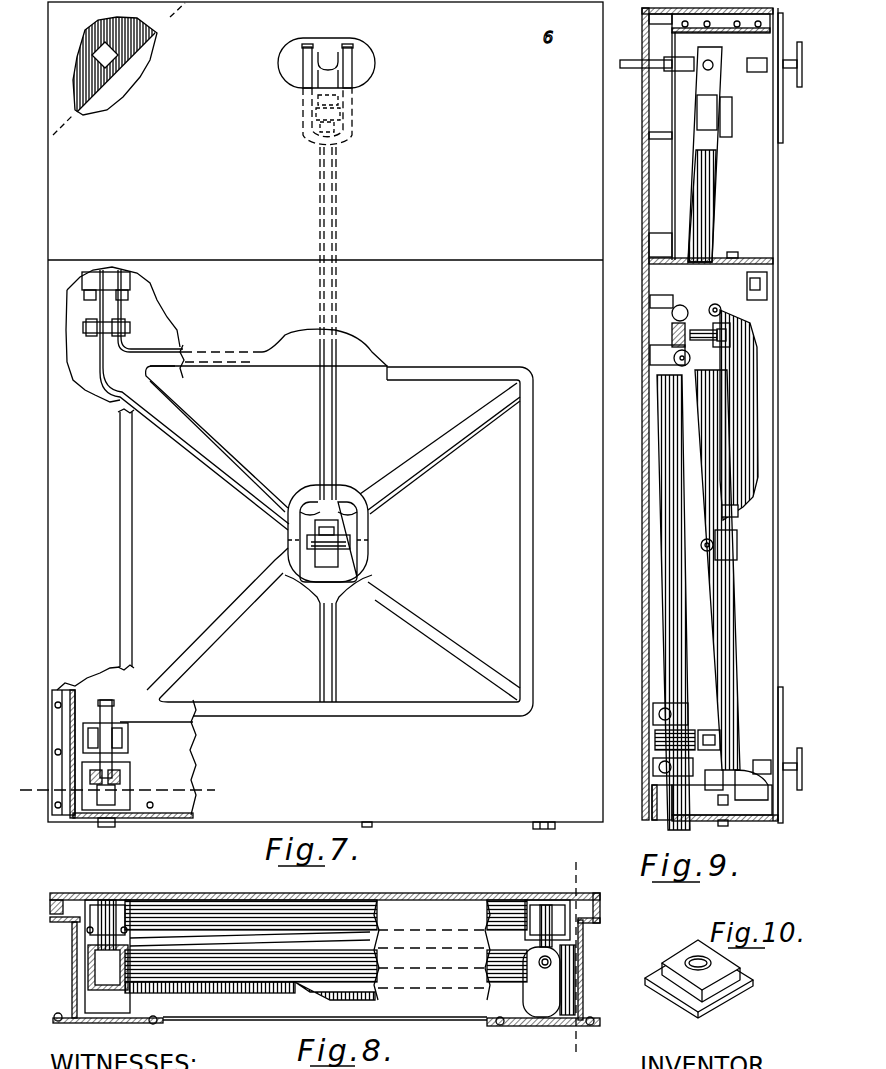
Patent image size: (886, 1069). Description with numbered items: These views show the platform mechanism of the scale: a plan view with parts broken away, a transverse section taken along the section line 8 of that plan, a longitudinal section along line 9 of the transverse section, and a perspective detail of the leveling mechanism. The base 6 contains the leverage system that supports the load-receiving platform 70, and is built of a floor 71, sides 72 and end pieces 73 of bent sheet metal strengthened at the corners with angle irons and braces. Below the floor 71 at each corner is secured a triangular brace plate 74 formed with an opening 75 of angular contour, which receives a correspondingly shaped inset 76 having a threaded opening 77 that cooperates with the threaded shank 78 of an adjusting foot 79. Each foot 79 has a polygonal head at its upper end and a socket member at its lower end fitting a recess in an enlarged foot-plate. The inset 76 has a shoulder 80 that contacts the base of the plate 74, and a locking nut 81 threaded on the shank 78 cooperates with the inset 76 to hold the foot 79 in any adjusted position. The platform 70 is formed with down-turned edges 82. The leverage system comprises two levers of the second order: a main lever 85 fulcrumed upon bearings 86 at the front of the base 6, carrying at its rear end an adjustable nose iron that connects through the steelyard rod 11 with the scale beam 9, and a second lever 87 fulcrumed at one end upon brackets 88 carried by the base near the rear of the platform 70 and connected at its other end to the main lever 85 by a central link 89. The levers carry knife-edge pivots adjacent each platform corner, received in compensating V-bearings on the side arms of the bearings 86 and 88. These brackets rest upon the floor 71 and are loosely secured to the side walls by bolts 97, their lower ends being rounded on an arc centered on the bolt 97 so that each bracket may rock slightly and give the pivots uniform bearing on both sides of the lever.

In FIG. 9, the base 6 is at (646, 34).
In FIG. 7, the section line 8— 8 is at (36, 812).
In FIG. 8, the scale beam 9 is at (591, 1048).
In FIG. 9, the steelyard rod 11 is at (632, 70).
In FIG. 9, the load-receiving platform 70 is at (647, 293).
In FIG. 8, the floor 71 is at (410, 1022).
In FIG. 8, the sides 72 is at (585, 977).
In FIG. 9, the end pieces 73 is at (778, 818).
In FIG. 7, the triangular brace plate 74 is at (105, 78).
In FIG. 8, the triangular brace plate 74 is at (530, 1027).
In FIG. 7, the opening 75 is at (110, 58).
In FIG. 10, the inset 76 is at (740, 968).
In FIG. 10, the threaded opening 77 is at (690, 960).
In FIG. 9, the threaded shank 78 is at (790, 56).
In FIG. 9, the adjusting foot 79 is at (798, 88).
In FIG. 10, the shoulder 80 is at (735, 996).
In FIG. 9, the locking nut 81 is at (772, 762).
In FIG. 9, the down-turned edges 82 is at (656, 815).
In FIG. 7, the main lever 85 is at (337, 445).
In FIG. 9, the main lever 85 is at (717, 631).
In FIG. 8, the main lever 85 is at (180, 957).
In FIG. 9, the bearings 86 is at (755, 808).
In FIG. 7, the second lever 87 is at (415, 470).
In FIG. 8, the second lever 87 is at (213, 995).
In FIG. 9, the brackets 88 is at (757, 283).
In FIG. 9, the central link 89 is at (727, 540).
In FIG. 7, the bolt 97 is at (116, 824).
In FIG. 9, the bolt 97 is at (731, 253).